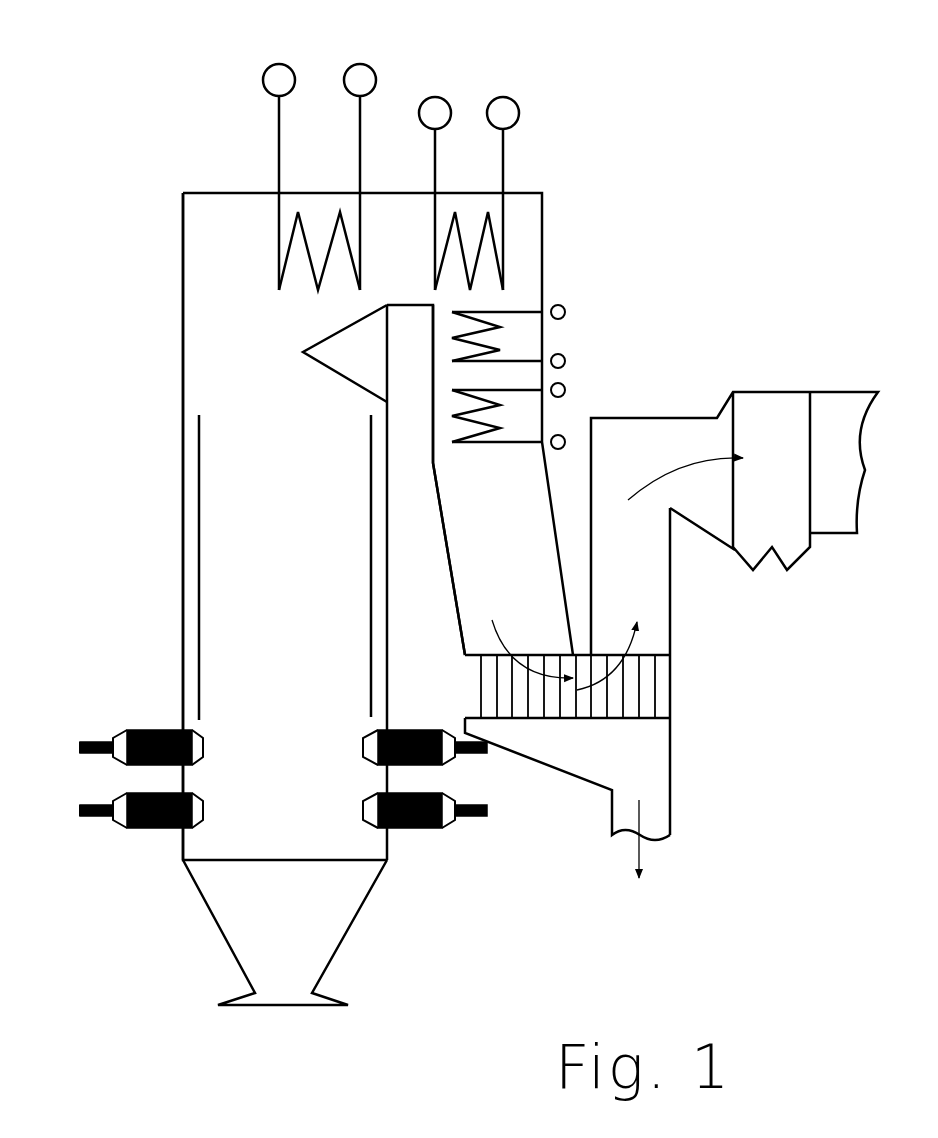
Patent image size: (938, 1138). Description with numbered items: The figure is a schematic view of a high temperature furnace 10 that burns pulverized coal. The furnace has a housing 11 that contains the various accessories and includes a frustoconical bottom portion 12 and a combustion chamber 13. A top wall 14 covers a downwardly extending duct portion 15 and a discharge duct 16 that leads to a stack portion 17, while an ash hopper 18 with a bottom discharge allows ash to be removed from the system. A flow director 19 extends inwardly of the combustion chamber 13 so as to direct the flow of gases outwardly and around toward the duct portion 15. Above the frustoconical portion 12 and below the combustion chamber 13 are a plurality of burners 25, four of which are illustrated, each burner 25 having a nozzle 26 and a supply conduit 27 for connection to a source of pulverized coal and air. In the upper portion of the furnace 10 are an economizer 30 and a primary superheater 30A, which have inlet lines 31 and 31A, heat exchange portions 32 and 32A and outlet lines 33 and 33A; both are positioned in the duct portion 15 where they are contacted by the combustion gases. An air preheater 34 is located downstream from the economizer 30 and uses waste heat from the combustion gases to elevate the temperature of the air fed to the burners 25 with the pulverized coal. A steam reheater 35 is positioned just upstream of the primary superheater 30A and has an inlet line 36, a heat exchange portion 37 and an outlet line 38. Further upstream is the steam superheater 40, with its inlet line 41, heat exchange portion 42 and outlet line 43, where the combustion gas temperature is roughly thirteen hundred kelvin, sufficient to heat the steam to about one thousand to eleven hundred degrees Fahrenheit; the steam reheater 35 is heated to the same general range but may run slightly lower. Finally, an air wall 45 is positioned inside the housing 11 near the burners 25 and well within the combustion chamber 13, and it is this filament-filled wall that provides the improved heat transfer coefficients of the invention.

The high temperature furnace 10 is at (92, 306).
The housing 11 is at (182, 605).
The frustoconical bottom portion 12 is at (238, 965).
The combustion chamber 13 is at (266, 557).
The top wall 14 is at (218, 190).
The duct portion 15 is at (437, 480).
The discharge duct 16 is at (672, 580).
The stack portion 17 is at (768, 390).
The ash hopper 18 is at (672, 807).
The flow director 19 is at (320, 368).
The burners 25 is at (170, 730).
The nozzle 26 is at (205, 808).
The supply conduit 27 is at (100, 752).
The economizer 30 is at (552, 451).
The primary superheater 30A is at (586, 377).
The inlet line 31 is at (497, 456).
The inlet line 31A is at (521, 357).
The heat exchange portion 32 is at (488, 416).
The heat exchange portion 32A is at (495, 336).
The outlet line 33 is at (497, 377).
The outlet line 33A is at (523, 310).
The air preheater 34 is at (640, 693).
The steam reheater 35 is at (520, 106).
The inlet line 36 is at (500, 165).
The heat exchange portion 37 is at (476, 252).
The outlet line 38 is at (432, 165).
The steam superheater 40 is at (376, 76).
The inlet line 41 is at (357, 152).
The heat exchange portion 42 is at (325, 252).
The outlet line 43 is at (276, 152).
The air wall 45 is at (200, 502).